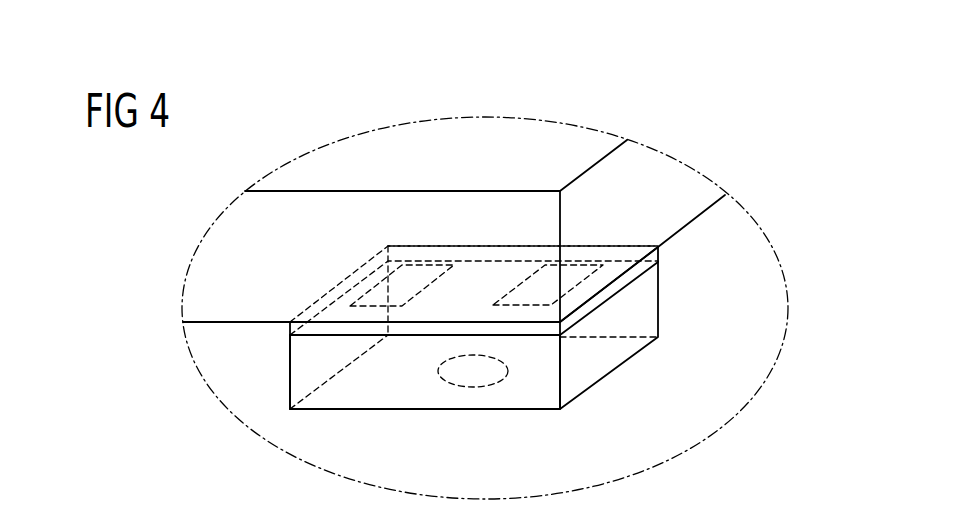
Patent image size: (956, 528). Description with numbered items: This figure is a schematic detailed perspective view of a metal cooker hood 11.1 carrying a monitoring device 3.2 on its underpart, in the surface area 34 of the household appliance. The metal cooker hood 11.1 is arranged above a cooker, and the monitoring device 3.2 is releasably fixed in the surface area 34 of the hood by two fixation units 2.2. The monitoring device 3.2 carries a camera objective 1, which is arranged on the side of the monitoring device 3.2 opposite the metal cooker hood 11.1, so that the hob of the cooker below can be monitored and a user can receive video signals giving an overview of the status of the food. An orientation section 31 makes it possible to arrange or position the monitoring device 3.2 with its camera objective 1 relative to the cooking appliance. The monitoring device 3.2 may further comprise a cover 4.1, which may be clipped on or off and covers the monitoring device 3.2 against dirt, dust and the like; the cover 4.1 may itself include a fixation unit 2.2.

The metal cooker hood 11.1 is at (479, 138).
The surface area 34 is at (481, 287).
The fixation unit 2.2 is at (400, 282).
The cover 4.1 is at (613, 288).
The monitoring device 3.2 is at (313, 361).
The orientation section 31 is at (407, 372).
The camera objective 1 is at (473, 372).